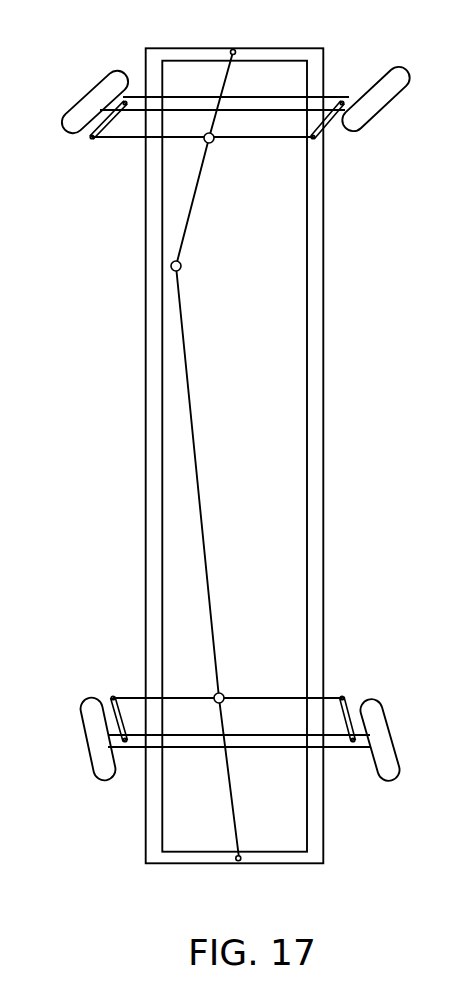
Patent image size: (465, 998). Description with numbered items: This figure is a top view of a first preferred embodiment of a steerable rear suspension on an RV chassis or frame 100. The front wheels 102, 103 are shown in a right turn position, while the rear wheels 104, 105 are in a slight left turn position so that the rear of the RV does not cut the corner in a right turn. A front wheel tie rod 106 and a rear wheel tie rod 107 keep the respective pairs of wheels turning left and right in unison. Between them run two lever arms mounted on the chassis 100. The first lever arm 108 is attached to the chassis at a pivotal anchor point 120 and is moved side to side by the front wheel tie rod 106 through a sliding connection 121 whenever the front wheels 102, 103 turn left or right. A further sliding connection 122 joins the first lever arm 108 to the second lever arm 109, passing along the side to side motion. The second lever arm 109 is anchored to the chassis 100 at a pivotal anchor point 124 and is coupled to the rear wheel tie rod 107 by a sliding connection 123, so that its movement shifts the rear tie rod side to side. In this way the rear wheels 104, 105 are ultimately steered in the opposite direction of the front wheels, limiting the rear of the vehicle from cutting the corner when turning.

The chassis 100 is at (145, 530).
The front wheel 102 is at (105, 78).
The front wheel 103 is at (365, 125).
The rear wheel 104 is at (92, 753).
The rear wheel 105 is at (382, 710).
The front wheel tie rod 106 is at (311, 139).
The rear wheel tie rod 107 is at (343, 695).
The first lever arm 108 is at (195, 185).
The second lever arm 109 is at (207, 575).
The pivotal anchor point 120 is at (234, 50).
The sliding connection 121 is at (213, 142).
The sliding connection 122 is at (180, 270).
The sliding connection 123 is at (222, 693).
The pivotal anchor point 124 is at (237, 860).